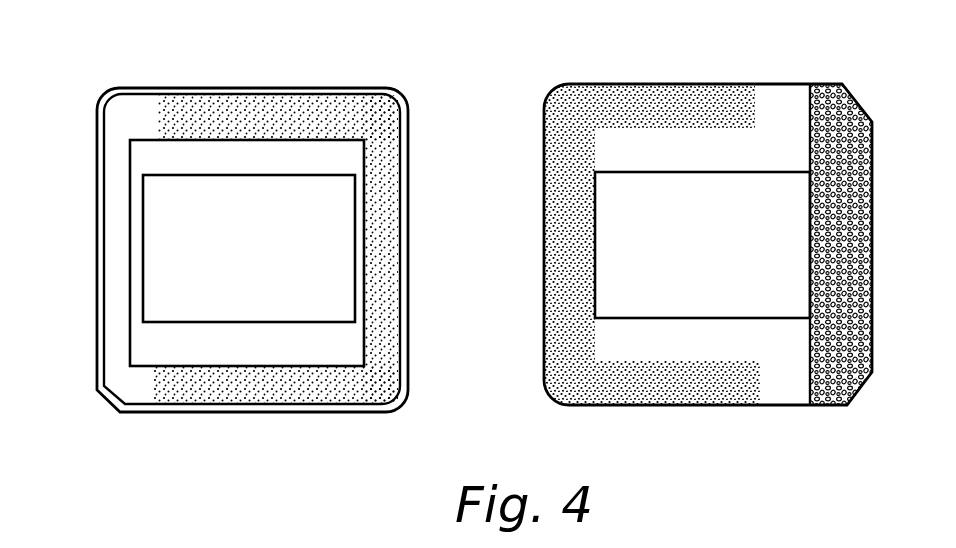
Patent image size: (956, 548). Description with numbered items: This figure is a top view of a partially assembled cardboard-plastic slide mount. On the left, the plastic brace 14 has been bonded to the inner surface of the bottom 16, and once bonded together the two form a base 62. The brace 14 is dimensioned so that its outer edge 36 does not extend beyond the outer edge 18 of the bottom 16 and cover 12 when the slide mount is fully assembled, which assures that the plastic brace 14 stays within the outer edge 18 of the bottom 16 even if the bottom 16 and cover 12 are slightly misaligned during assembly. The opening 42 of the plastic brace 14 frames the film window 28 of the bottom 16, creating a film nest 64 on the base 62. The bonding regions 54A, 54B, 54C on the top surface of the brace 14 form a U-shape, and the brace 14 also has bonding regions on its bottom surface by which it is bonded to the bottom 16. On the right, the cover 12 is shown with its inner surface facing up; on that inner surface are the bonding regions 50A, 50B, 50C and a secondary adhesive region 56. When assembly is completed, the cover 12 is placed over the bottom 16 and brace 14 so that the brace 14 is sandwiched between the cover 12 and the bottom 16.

The cover 12 is at (769, 86).
The brace 14 is at (186, 383).
The bottom 16 is at (262, 88).
The outer edge 18 is at (97, 220).
The film window 28 is at (214, 192).
The outer edge 36 is at (105, 278).
The opening 42 is at (312, 352).
The bonding region 50A is at (667, 95).
The bonding region 50B is at (560, 201).
The bonding region 50C is at (697, 390).
The bonding region 54A is at (360, 105).
The bonding region 54B is at (387, 284).
The bonding region 54C is at (260, 393).
The secondary adhesive region 56 is at (872, 170).
The base 62 is at (66, 100).
The film nest 64 is at (223, 343).